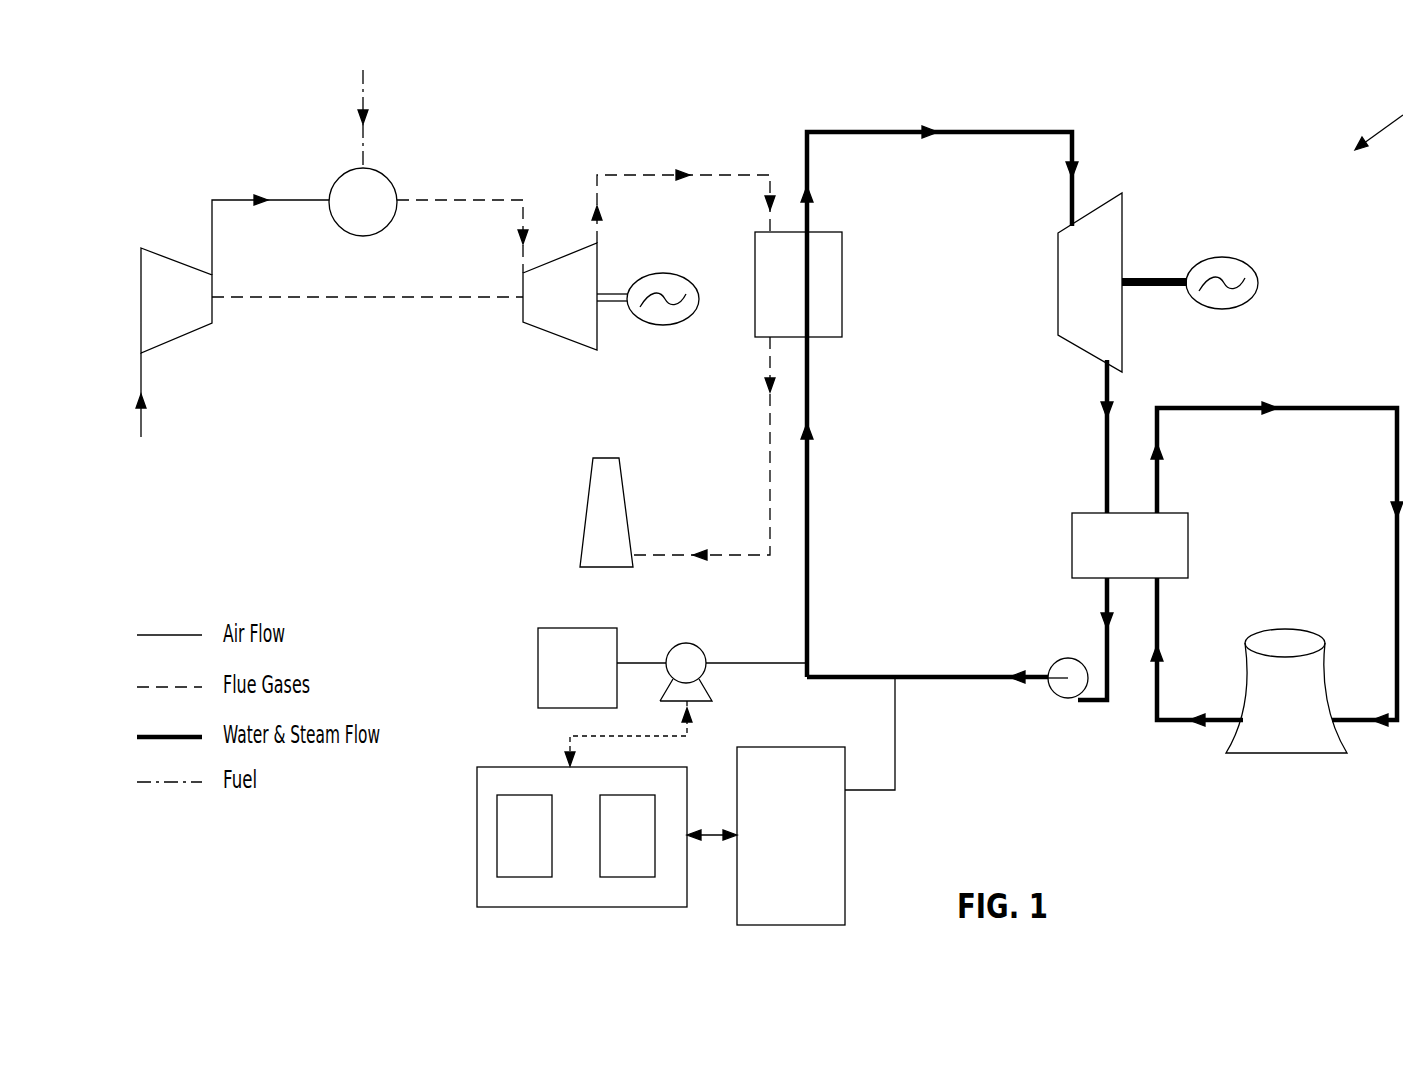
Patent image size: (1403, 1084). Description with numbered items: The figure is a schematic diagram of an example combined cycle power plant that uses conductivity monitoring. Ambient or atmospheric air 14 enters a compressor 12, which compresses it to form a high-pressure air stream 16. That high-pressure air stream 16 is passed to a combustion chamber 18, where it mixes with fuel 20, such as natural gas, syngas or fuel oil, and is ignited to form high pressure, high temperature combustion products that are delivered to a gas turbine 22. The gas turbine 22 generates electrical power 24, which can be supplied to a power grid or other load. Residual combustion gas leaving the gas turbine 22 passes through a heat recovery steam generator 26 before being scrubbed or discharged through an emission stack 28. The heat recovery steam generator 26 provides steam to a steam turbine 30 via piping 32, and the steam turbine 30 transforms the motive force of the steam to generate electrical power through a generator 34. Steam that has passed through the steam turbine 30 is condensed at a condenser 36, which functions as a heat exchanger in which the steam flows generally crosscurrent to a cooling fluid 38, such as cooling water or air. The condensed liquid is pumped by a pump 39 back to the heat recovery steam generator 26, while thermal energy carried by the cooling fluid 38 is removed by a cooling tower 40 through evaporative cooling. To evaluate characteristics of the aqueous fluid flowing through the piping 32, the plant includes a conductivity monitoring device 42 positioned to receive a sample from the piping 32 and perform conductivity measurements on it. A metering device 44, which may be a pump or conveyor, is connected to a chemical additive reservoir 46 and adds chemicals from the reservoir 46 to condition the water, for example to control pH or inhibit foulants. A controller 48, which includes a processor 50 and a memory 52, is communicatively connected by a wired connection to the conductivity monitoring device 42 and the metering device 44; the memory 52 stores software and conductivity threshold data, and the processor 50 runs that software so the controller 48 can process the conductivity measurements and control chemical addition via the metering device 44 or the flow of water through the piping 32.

The compressor 12 is at (145, 248).
The ambient or atmospheric air 14 is at (140, 422).
The high-pressure air stream 16 is at (283, 297).
The combustion chamber 18 is at (393, 222).
The fuel 20 is at (356, 104).
The gas turbine 22 is at (566, 258).
The electrical power 24 is at (664, 273).
The heat recovery steam generator 26 is at (809, 296).
The emission stack 28 is at (627, 517).
The steam turbine 30 is at (1105, 200).
The piping 32 is at (975, 130).
The generator 34 is at (1260, 281).
The condenser 36 is at (1141, 560).
The cooling fluid 38 is at (1292, 405).
The pump 39 is at (1058, 659).
The cooling tower 40 is at (1283, 628).
The conductivity monitoring device 42 is at (798, 847).
The metering device 44 is at (688, 641).
The chemical additive reservoir 46 is at (589, 680).
The controller 48 is at (477, 832).
The processor 50 is at (535, 845).
The memory 52 is at (638, 845).